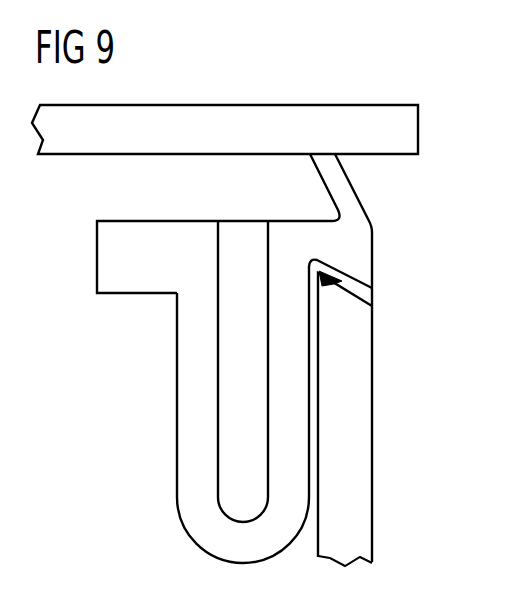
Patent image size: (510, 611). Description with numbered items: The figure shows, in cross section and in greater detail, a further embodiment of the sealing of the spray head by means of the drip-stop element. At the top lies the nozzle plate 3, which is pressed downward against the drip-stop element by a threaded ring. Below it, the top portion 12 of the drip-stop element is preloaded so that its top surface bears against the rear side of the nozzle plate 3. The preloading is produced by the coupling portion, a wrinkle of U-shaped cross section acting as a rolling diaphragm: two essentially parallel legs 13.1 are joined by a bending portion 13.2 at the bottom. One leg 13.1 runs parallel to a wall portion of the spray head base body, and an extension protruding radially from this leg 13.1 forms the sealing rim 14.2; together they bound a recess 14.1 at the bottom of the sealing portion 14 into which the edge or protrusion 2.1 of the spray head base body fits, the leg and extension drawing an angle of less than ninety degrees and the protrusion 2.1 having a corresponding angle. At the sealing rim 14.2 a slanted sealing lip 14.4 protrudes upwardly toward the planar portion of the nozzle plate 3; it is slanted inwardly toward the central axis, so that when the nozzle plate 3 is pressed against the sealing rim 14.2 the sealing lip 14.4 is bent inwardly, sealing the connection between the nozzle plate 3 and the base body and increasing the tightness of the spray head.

The nozzle plate 3 is at (405, 129).
The top portion 12 is at (157, 221).
The leg 13.1 is at (297, 403).
The bending portion 13.2 is at (201, 533).
The sealing portion 14 is at (386, 223).
The recess 14.1 is at (358, 284).
The sealing rim 14.2 is at (358, 250).
The sealing lip 14.4 is at (347, 185).
The edge or protrusion 2.1 is at (324, 282).